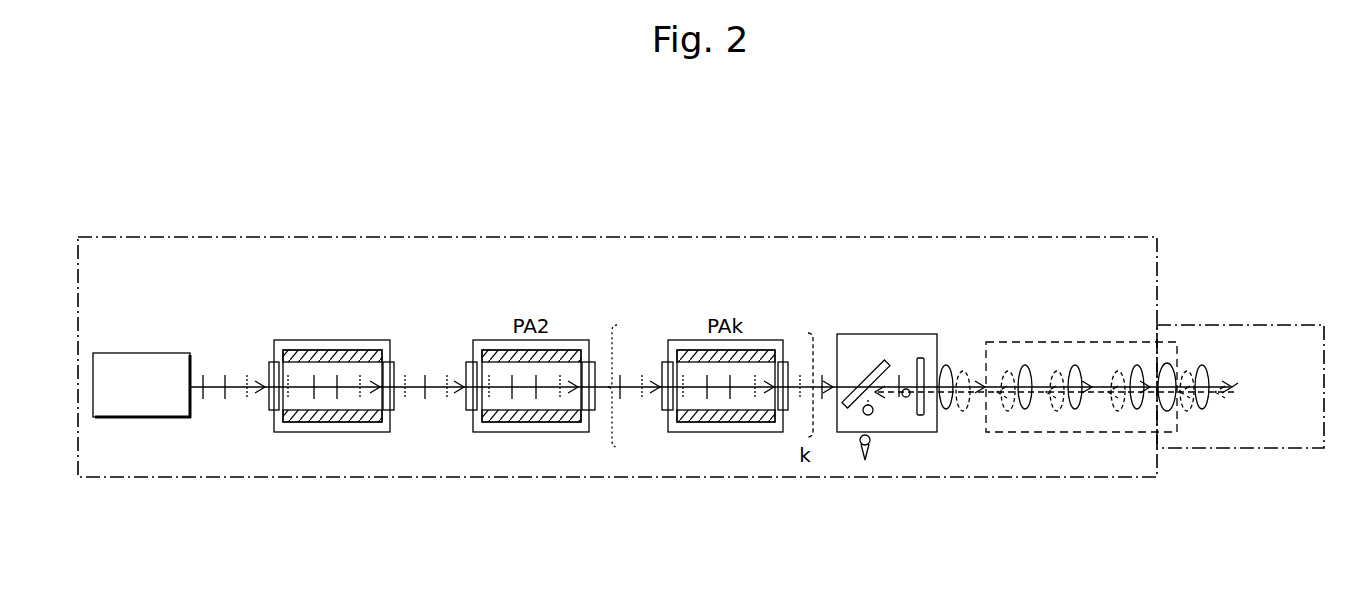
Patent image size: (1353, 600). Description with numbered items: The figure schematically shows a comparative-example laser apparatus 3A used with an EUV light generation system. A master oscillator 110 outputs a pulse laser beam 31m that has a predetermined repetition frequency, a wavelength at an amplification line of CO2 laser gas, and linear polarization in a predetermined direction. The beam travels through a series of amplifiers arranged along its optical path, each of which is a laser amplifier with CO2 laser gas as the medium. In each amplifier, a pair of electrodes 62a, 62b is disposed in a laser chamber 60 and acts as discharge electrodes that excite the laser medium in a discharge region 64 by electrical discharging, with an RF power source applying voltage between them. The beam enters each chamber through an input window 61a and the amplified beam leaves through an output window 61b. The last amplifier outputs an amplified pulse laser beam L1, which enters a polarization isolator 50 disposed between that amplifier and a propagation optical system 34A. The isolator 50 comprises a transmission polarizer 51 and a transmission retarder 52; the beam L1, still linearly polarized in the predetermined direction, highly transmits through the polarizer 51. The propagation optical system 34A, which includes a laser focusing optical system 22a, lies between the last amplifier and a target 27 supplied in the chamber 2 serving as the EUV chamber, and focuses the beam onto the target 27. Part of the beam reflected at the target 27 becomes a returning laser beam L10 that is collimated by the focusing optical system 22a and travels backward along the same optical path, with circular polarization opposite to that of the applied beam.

The master oscillator 110 is at (140, 353).
The pulse laser beam 31m is at (207, 382).
The laser chamber 60 is at (333, 382).
The input window 61a is at (273, 412).
The output window 61b is at (392, 412).
The electrode 62a is at (358, 362).
The electrode 62b is at (340, 415).
The discharge region 64 is at (300, 406).
The laser apparatus 3A is at (615, 237).
The amplified pulse laser beam L1 is at (818, 384).
The polarization isolator 50 is at (887, 353).
The polarizer 51 is at (867, 368).
The retarder 52 is at (920, 416).
The propagation optical system 34A is at (1078, 342).
The chamber 2 is at (1235, 397).
The laser focusing optical system 22a is at (1167, 410).
The target 27 is at (1237, 392).
The returning laser beam L10 is at (857, 430).